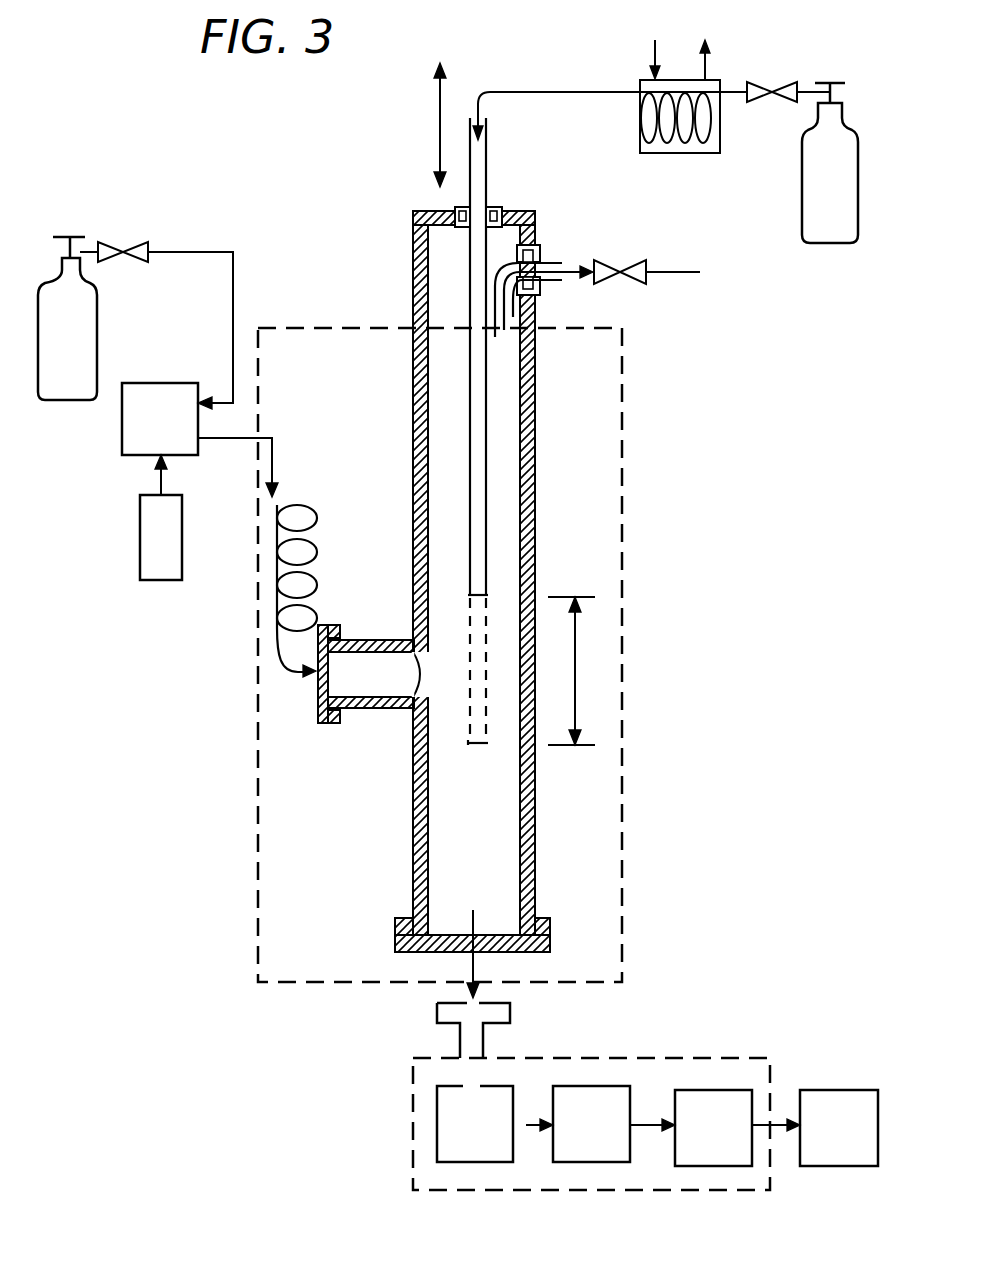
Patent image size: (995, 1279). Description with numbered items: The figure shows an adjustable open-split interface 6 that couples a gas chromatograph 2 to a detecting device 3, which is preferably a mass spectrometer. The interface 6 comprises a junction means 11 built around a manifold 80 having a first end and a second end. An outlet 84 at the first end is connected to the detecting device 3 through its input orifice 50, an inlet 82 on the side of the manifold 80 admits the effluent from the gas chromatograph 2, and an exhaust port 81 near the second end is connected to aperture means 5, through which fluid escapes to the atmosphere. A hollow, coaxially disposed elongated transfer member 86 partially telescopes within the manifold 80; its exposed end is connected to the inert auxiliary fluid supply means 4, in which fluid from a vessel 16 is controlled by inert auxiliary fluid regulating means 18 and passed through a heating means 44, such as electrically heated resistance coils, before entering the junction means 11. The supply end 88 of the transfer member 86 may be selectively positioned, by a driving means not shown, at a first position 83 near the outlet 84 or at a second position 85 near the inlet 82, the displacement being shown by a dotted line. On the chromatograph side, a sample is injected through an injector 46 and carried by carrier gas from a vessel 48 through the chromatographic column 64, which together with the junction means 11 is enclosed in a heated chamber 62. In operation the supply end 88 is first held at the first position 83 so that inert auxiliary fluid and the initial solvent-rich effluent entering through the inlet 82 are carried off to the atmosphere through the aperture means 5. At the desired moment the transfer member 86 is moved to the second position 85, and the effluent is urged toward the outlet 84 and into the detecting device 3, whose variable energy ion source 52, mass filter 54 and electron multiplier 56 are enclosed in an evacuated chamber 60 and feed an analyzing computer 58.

The gas chromatograph 2 is at (112, 534).
The detecting device 3 is at (700, 1030).
The inert auxiliary fluid supply means 4 is at (773, 150).
The aperture means 5 is at (625, 250).
The adjustable open-split interface 6 is at (670, 465).
The junction means 11 is at (405, 782).
The vessel 16 is at (825, 243).
The inert auxiliary fluid regulating means 18 is at (823, 75).
The heating means 44 is at (705, 153).
The injector 46 is at (166, 580).
The vessel 48 is at (97, 310).
The input orifice 50 is at (468, 1000).
The variable energy ion source 52 is at (462, 1139).
The mass filter 54 is at (578, 1139).
The electron multiplier 56 is at (700, 1143).
The analyzing computer 58 is at (826, 1143).
The evacuated chamber 60 is at (412, 1100).
The heated chamber 62 is at (622, 862).
The chromatographic column 64 is at (317, 540).
The manifold 80 is at (535, 460).
The exhaust port 81 is at (545, 290).
The inlet 82 is at (313, 676).
The first position 83 is at (470, 745).
The outlet 84 is at (467, 955).
The second position 85 is at (468, 598).
The elongated transfer member 86 is at (487, 175).
The supply end 88 is at (486, 568).